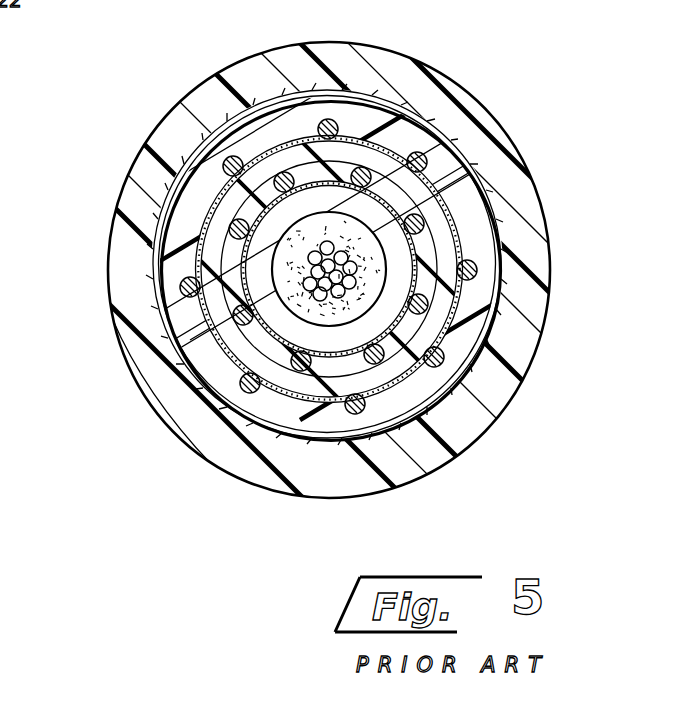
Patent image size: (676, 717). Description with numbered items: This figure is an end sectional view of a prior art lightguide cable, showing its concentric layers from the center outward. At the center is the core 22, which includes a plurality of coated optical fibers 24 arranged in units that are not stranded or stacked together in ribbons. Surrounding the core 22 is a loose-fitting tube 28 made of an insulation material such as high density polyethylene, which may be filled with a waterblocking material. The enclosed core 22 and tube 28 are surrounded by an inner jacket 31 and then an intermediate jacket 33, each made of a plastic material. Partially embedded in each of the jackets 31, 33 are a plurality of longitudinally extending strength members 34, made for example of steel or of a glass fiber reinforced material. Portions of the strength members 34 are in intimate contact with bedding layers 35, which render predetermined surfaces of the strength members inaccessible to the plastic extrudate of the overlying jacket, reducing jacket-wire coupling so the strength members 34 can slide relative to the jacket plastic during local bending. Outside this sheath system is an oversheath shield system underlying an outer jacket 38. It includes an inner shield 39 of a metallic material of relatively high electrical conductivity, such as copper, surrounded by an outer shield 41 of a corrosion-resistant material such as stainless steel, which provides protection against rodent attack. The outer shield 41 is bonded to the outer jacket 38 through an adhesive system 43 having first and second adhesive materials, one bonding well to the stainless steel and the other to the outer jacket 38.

The core 22 is at (370, 257).
The coated optical fibers 24 is at (393, 209).
The tube 28 is at (462, 297).
The inner jacket 31 is at (434, 235).
The intermediate jacket 33 is at (217, 370).
The strength members 34 is at (420, 152).
The bedding layers 35 is at (195, 254).
The outer jacket 38 is at (522, 357).
The inner shield 39 is at (203, 150).
The outer shield 41 is at (213, 146).
The adhesive system 43 is at (384, 196).